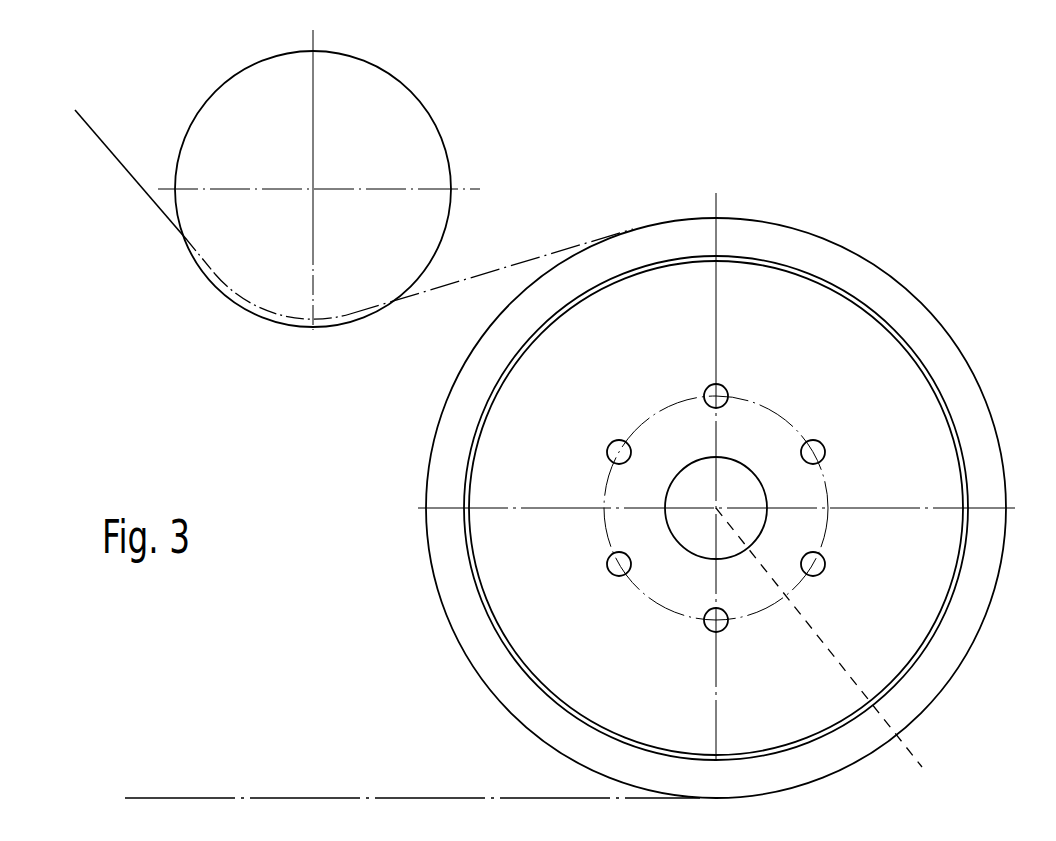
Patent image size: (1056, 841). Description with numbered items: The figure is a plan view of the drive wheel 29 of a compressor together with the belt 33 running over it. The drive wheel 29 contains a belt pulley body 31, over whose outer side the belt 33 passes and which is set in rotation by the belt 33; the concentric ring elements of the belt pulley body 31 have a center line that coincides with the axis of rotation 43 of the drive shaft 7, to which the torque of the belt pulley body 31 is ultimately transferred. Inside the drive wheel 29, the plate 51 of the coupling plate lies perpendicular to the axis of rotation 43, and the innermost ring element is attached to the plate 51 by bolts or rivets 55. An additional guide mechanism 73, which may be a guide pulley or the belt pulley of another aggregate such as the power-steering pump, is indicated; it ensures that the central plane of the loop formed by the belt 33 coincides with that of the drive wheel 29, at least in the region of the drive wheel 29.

The drive shaft 7 is at (737, 485).
The drive wheel 29 is at (416, 459).
The belt pulley body 31 is at (858, 282).
The belt 33 is at (160, 796).
The axis of rotation 43 is at (833, 644).
The plate 51 is at (622, 381).
The bolts or rivets 55 is at (607, 450).
The guide mechanism 73 is at (435, 88).